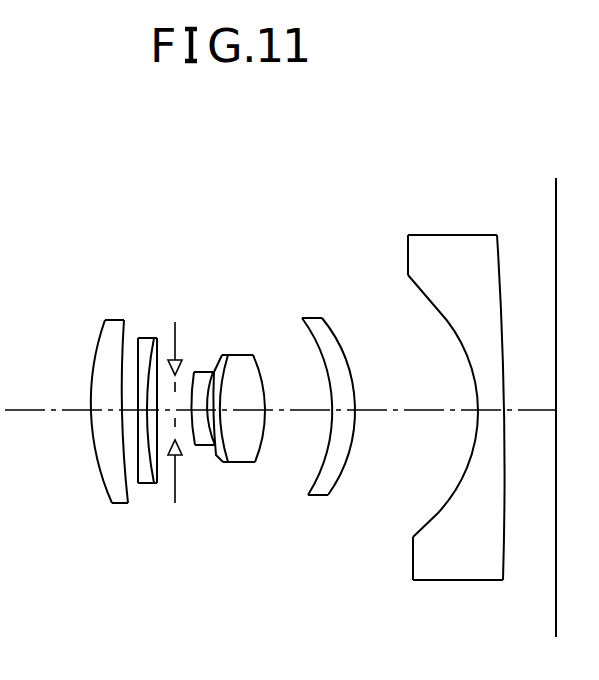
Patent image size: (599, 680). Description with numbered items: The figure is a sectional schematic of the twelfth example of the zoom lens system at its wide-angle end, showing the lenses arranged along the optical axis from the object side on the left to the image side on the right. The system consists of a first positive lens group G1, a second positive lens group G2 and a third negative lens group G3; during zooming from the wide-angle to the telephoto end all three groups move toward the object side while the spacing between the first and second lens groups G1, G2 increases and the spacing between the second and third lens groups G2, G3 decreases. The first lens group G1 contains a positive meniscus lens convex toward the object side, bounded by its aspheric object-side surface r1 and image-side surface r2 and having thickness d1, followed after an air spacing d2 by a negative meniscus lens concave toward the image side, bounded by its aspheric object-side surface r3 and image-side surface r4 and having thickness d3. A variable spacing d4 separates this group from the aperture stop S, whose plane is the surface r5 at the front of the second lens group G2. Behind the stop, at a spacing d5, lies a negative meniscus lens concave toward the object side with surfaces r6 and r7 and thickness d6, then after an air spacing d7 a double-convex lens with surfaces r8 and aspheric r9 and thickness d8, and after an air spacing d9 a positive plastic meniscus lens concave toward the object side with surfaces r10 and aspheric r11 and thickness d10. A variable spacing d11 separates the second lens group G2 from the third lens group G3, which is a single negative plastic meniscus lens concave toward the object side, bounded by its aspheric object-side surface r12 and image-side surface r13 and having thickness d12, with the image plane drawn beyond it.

The first positive lens group G1 is at (157, 190).
The second positive lens group G2 is at (327, 190).
The third negative lens group G3 is at (494, 193).
The aperture stop S is at (177, 322).
The radius of curvature of first lens surface r1 is at (95, 350).
The radius of curvature of second lens surface r2 is at (123, 352).
The radius of curvature of third lens surface r3 is at (137, 337).
The radius of curvature of fourth lens surface r4 is at (147, 338).
The radius of curvature of fifth surface r5 is at (194, 370).
The radius of curvature of sixth lens surface r6 is at (211, 372).
The radius of curvature of seventh lens surface r7 is at (220, 357).
The radius of curvature of eighth lens surface r8 is at (232, 356).
The radius of curvature of ninth lens surface r9 is at (255, 355).
The radius of curvature of tenth lens surface r10 is at (312, 352).
The radius of curvature of eleventh lens surface r11 is at (336, 340).
The radius of curvature of twelfth lens surface r12 is at (436, 312).
The radius of curvature of thirteenth lens surface r13 is at (499, 270).
The first surface spacing d1 is at (108, 422).
The second surface spacing d2 is at (130, 335).
The third surface spacing d3 is at (148, 340).
The fourth surface spacing d4 is at (158, 484).
The fifth surface spacing d5 is at (193, 447).
The sixth surface spacing d6 is at (208, 447).
The seventh surface spacing d7 is at (218, 455).
The eighth surface spacing d8 is at (236, 432).
The ninth surface spacing d9 is at (290, 432).
The tenth surface spacing d10 is at (345, 440).
The eleventh surface spacing d11 is at (412, 430).
The twelfth surface spacing d12 is at (486, 411).